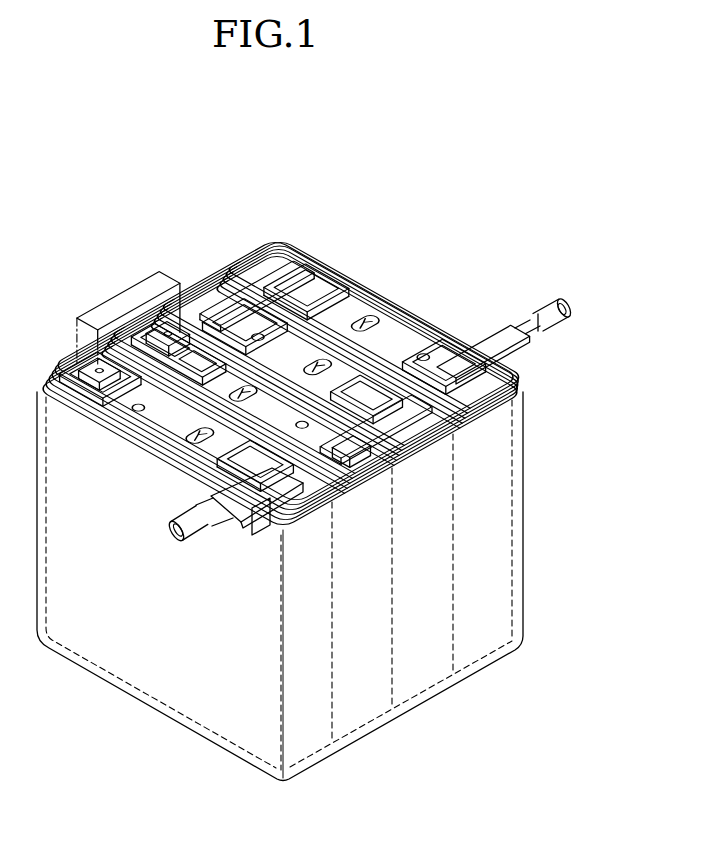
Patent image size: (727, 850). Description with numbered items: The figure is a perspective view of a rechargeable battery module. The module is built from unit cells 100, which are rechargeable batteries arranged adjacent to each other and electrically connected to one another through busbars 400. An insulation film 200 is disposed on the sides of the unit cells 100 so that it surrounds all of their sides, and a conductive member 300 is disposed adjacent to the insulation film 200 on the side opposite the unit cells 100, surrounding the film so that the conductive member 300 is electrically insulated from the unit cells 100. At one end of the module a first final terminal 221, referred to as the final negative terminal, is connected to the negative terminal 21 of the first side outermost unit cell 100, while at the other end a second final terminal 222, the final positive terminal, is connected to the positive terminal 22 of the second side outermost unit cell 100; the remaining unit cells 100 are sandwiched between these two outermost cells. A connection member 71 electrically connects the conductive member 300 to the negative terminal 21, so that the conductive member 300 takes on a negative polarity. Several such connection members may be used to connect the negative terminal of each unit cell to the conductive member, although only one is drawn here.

The unit cells 100 is at (153, 696).
The insulation film 200 is at (497, 403).
The conductive member 300 is at (522, 380).
The busbars 400 is at (263, 271).
The negative terminal 21 is at (150, 334).
The positive terminal 22 is at (360, 460).
The first final terminal 221 is at (216, 495).
The second final terminal 222 is at (492, 346).
The connection member 71 is at (253, 533).